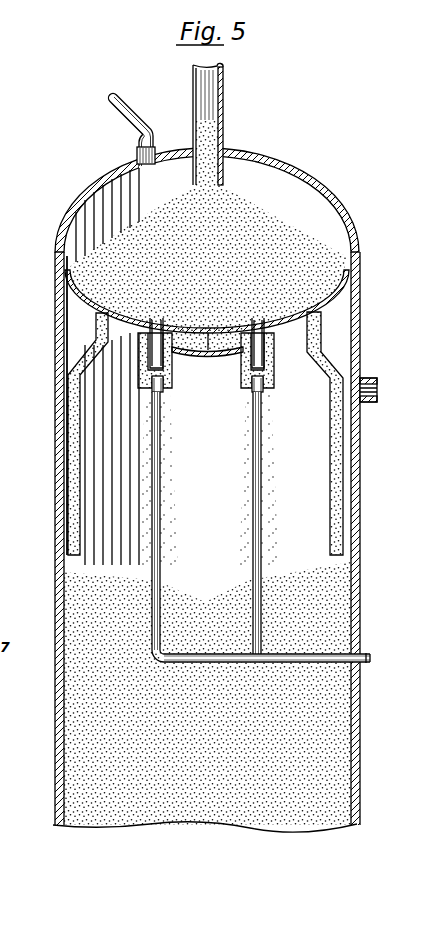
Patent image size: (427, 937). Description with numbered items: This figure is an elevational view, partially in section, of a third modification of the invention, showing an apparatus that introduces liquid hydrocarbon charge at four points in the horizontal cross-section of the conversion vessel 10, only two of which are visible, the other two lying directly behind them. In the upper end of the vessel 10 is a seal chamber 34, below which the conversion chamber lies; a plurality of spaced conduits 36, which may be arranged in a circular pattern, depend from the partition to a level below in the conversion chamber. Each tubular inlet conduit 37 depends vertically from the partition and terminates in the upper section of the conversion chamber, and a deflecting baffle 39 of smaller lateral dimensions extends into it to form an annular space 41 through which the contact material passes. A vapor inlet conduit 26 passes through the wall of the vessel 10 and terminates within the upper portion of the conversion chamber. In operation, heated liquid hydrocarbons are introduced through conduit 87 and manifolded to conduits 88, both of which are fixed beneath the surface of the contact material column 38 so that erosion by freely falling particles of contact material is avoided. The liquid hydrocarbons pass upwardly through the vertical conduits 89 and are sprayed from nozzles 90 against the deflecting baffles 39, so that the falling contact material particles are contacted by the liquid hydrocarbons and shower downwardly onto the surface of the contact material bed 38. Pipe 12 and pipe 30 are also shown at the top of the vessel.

The conversion vessel 10 is at (55, 363).
The feed pipe 12 is at (223, 88).
The vapor inlet conduit 26 is at (366, 404).
The inlet pipe 30 is at (132, 111).
The seal chamber 34 is at (285, 183).
The spaced conduits 36 is at (68, 436).
The tubular inlet conduit 37 is at (167, 386).
The contact material column 38 is at (98, 570).
The deflecting baffle 39 is at (158, 334).
The annular space 41 is at (172, 369).
The liquid hydrocarbon conduit 87 is at (368, 665).
The manifold conduits 88 is at (215, 663).
The vertical conduits 89 is at (160, 500).
The nozzles 90 is at (163, 393).